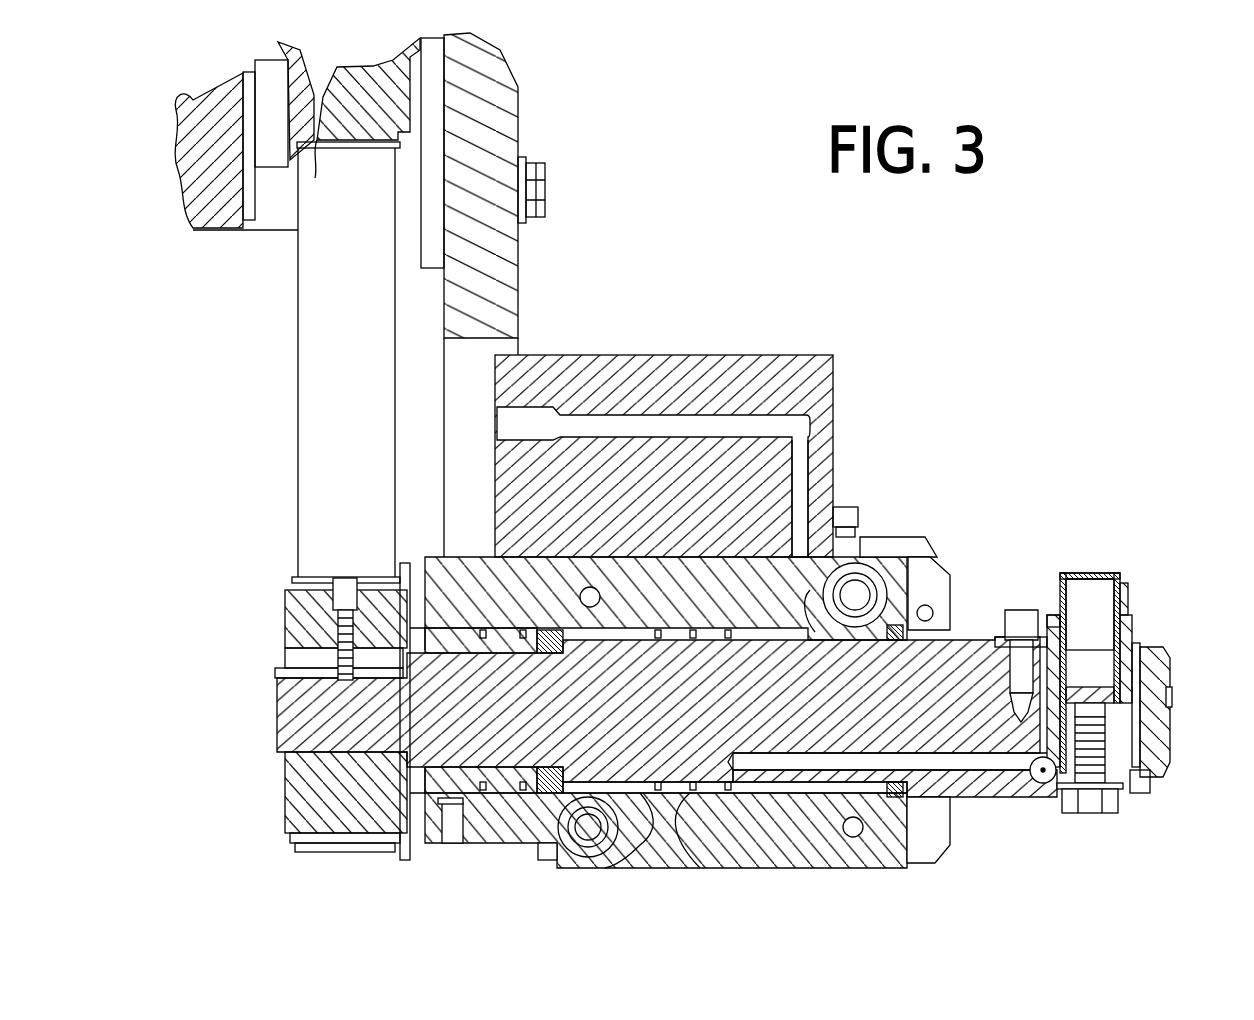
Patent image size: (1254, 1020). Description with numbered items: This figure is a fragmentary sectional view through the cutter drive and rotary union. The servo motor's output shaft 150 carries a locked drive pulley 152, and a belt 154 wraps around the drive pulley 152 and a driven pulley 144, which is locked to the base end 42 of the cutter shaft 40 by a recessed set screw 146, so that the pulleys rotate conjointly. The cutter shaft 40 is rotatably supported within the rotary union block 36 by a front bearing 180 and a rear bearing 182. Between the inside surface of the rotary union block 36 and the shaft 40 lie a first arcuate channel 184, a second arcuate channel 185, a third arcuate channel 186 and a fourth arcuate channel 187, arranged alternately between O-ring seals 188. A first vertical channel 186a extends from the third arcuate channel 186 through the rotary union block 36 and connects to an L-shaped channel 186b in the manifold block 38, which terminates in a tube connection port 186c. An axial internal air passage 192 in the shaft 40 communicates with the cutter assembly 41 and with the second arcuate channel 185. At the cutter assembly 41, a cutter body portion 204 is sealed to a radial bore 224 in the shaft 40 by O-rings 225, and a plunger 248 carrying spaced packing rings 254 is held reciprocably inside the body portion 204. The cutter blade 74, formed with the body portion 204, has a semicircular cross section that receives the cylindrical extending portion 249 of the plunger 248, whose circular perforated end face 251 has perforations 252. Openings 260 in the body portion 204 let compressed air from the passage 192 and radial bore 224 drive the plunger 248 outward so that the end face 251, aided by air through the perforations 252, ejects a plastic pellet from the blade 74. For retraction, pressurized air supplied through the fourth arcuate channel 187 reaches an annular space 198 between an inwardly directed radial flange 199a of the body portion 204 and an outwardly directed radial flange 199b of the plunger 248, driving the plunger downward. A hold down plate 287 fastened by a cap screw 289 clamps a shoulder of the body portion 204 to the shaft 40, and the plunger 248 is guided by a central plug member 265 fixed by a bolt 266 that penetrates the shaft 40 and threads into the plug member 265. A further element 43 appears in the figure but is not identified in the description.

The output shaft 150 is at (268, 48).
The drive pulley 152 is at (395, 92).
The belt 154 is at (318, 345).
The manifold block 38 is at (788, 351).
The tube connection port 186c is at (516, 418).
The L-shaped channel 186b is at (812, 502).
The first vertical channel 186a is at (836, 542).
The third arcuate channel 186 is at (838, 582).
The rear bearing 182 is at (505, 592).
The first arcuate channel 184 is at (597, 622).
The O-ring seals 188 is at (672, 628).
The second arcuate channel 185 is at (728, 627).
The fourth arcuate channel 187 is at (688, 840).
The front bearing 180 is at (908, 600).
The base end 42 is at (275, 712).
The cutter body portion 204 is at (1038, 737).
The axial internal air passage 192 is at (1000, 790).
The recessed set screw 146 is at (345, 663).
The driven pulley 144 is at (290, 805).
The rotary union block 36 is at (872, 871).
The cutter shaft 40 is at (965, 802).
The cap screw 289 is at (1020, 608).
The hold down plate 287 is at (1000, 638).
The cutter blade 74 is at (1128, 632).
The cylindrical extending portion 249 is at (1060, 620).
The cutter assembly 41 is at (1124, 565).
The perforations 252 is at (1074, 569).
The circular perforated end face 251 is at (1068, 572).
The plunger 248 is at (1130, 585).
The inwardly directed radial flange 199a is at (1078, 650).
The outwardly directed radial flange 199b is at (1047, 652).
The packing rings 254 is at (1135, 643).
The annular space 198 is at (1150, 662).
The O-rings 225 is at (1167, 692).
The radial bore 224 is at (1148, 718).
The retainer 43 is at (1150, 778).
The openings 260 is at (1042, 785).
The bolt 266 is at (1090, 815).
The central plug member 265 is at (1115, 795).